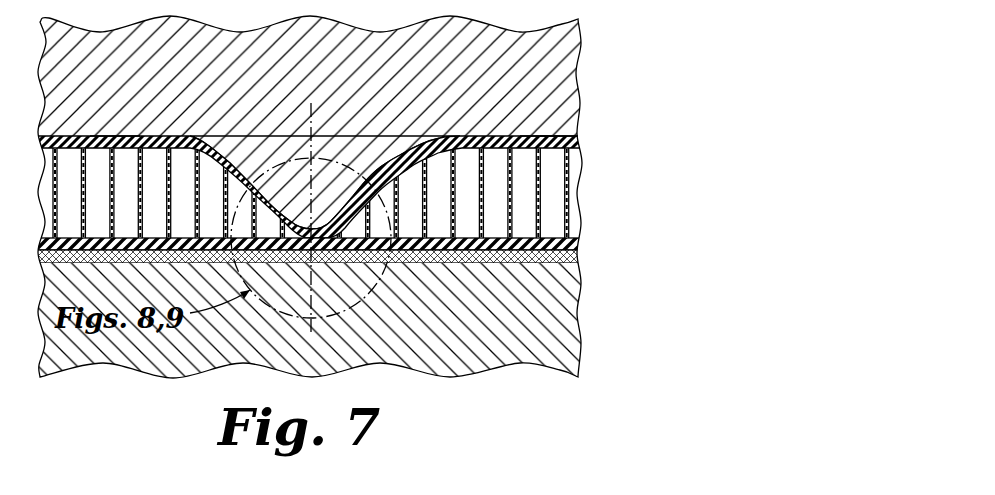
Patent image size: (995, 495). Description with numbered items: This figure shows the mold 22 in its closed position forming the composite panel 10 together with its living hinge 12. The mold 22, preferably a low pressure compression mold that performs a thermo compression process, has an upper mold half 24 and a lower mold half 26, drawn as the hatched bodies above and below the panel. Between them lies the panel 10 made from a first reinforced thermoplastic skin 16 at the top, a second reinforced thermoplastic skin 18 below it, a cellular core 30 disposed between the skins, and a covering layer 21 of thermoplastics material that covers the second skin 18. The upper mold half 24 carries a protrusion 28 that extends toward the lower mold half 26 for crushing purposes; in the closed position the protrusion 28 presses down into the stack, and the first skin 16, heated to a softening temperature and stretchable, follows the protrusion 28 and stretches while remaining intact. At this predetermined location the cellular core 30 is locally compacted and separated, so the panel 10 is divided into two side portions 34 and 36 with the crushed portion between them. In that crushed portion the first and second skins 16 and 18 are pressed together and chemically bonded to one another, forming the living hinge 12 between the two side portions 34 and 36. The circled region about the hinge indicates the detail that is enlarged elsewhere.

The composite panel 10 is at (581, 133).
The living hinge 12 is at (312, 263).
The first reinforced thermoplastic skin 16 is at (573, 147).
The second reinforced thermoplastic skin 18 is at (578, 245).
The covering layer 21 is at (580, 257).
The mold 22 is at (692, 143).
The upper mold half 24 is at (583, 58).
The lower mold half 26 is at (580, 326).
The protrusion 28 is at (335, 173).
The core pillars 30 is at (580, 197).
The side portion 34 is at (113, 135).
The side portion 36 is at (546, 136).